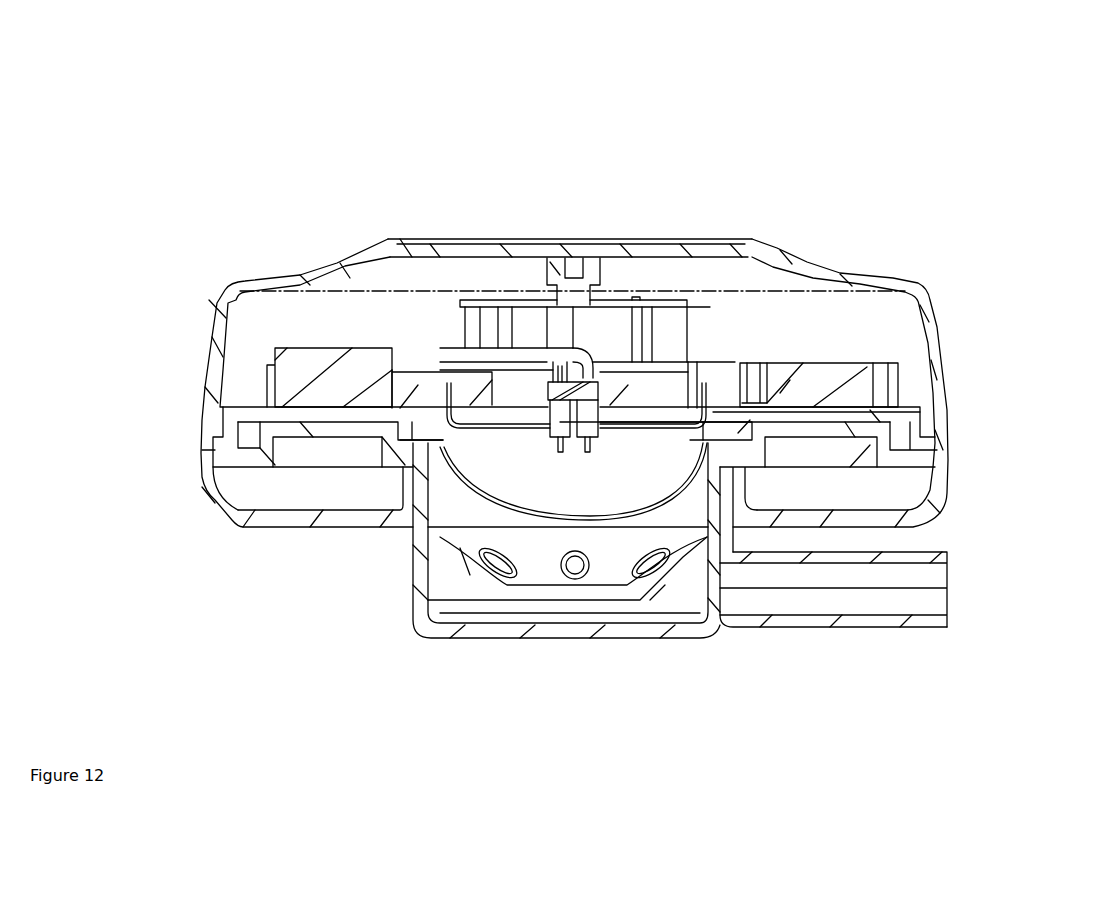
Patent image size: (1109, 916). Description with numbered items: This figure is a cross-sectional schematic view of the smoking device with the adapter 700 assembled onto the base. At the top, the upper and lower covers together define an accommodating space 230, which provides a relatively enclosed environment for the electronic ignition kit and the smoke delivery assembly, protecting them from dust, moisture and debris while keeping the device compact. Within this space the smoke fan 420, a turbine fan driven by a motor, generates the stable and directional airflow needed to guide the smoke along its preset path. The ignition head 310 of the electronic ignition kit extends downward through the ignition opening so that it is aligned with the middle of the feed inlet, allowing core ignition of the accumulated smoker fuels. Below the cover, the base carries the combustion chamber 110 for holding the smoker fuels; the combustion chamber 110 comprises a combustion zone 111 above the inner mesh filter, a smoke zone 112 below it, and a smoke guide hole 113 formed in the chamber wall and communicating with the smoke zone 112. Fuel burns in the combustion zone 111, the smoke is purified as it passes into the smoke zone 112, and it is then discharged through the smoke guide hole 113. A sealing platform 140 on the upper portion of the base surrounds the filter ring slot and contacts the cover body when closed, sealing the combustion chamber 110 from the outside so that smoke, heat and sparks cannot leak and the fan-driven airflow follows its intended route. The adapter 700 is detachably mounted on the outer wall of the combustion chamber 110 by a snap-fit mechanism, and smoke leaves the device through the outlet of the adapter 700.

The combustion chamber 110 is at (425, 563).
The combustion zone 111 is at (500, 473).
The smoke zone 112 is at (473, 520).
The smoke guide hole 113 is at (557, 567).
The sealing platform 140 is at (323, 425).
The accommodating space 230 is at (753, 323).
The ignition head 310 is at (562, 403).
The smoke fan 420 is at (814, 388).
The adapter 700 is at (565, 632).